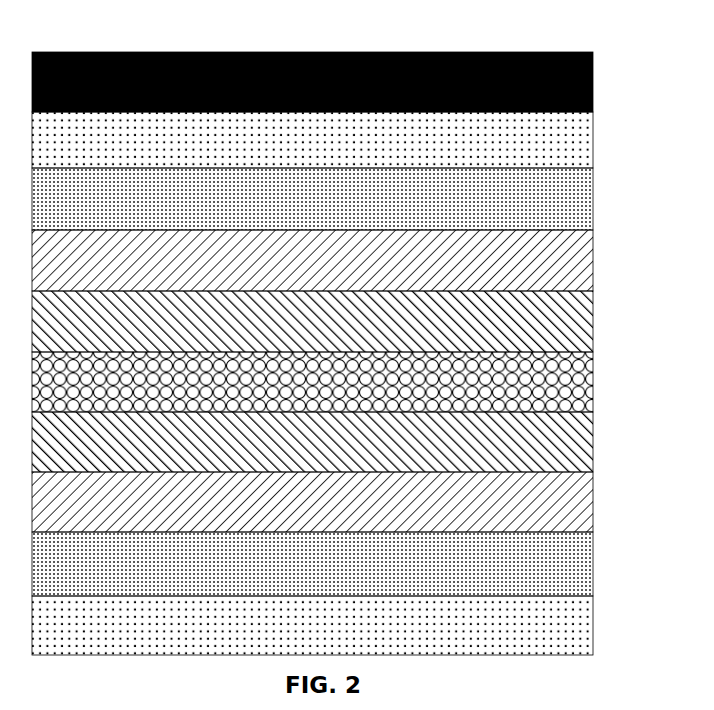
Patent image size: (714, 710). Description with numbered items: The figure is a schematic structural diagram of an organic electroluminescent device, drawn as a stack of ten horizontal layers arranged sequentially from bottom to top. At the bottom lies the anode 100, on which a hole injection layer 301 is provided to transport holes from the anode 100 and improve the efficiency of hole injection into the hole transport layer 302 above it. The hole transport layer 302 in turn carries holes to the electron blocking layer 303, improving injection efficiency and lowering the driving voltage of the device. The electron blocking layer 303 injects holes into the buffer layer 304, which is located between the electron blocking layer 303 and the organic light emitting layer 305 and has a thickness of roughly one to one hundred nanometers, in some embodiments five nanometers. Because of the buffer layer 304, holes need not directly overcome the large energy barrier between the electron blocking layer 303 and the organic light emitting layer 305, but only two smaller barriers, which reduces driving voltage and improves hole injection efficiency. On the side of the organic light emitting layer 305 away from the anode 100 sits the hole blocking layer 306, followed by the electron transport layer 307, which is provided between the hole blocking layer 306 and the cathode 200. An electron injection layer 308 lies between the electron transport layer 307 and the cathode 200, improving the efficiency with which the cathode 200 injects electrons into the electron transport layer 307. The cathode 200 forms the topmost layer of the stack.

The cathode 200 is at (593, 80).
The electron injection layer 308 is at (593, 137).
The electron transport layer 307 is at (593, 196).
The hole blocking layer 306 is at (593, 257).
The organic light emitting layer 305 is at (593, 318).
The buffer layer 304 is at (593, 377).
The electron blocking layer 303 is at (593, 437).
The hole transport layer 302 is at (593, 497).
The hole injection layer 301 is at (593, 558).
The anode 100 is at (593, 618).